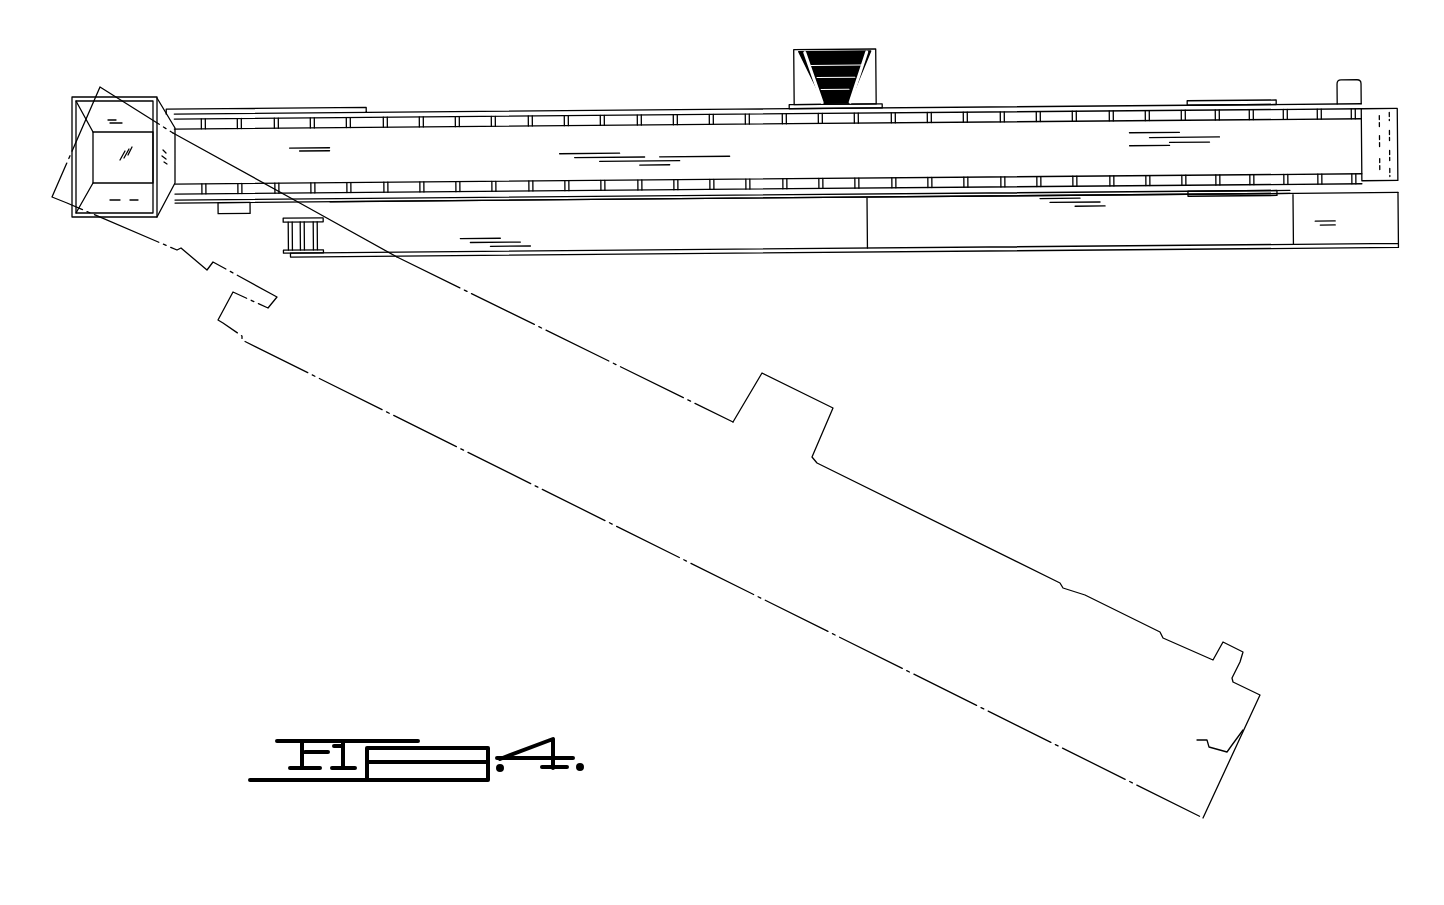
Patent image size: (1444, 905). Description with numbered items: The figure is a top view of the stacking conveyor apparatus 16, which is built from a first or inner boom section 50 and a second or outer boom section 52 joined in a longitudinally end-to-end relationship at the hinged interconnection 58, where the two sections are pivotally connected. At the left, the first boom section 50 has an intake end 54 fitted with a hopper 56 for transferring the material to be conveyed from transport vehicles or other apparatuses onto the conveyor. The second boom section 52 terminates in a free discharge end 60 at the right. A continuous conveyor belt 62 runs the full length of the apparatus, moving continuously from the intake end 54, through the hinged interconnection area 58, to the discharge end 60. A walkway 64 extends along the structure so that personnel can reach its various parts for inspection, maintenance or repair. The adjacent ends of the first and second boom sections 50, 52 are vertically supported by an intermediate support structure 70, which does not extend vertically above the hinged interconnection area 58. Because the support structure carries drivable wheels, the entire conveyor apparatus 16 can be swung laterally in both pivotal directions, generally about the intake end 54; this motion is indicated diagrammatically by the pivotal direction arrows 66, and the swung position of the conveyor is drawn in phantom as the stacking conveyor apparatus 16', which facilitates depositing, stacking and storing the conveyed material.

The stacking conveyor apparatus 16 is at (844, 266).
The stacking conveyor apparatus in laterally pivoted position 16' is at (656, 452).
The first or inner boom section 50 is at (484, 113).
The second or outer boom section 52 is at (1129, 112).
The intake end 54 is at (165, 104).
The hopper 56 is at (125, 205).
The hinged interconnection 58 is at (867, 236).
The discharge end 60 is at (1398, 132).
The continuous conveyor belt 62 is at (1018, 144).
The walkway 64 is at (1077, 236).
The pivotal direction arrows 66 is at (837, 47).
The intermediate support structure 70 is at (872, 75).